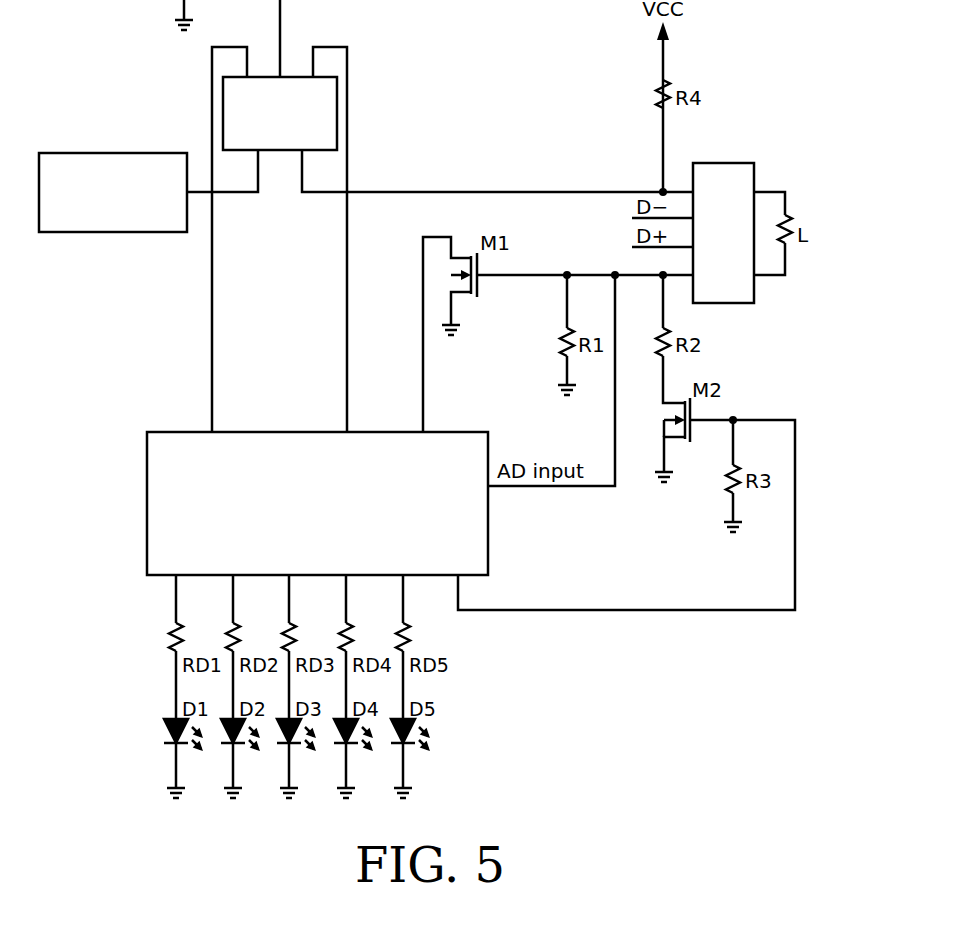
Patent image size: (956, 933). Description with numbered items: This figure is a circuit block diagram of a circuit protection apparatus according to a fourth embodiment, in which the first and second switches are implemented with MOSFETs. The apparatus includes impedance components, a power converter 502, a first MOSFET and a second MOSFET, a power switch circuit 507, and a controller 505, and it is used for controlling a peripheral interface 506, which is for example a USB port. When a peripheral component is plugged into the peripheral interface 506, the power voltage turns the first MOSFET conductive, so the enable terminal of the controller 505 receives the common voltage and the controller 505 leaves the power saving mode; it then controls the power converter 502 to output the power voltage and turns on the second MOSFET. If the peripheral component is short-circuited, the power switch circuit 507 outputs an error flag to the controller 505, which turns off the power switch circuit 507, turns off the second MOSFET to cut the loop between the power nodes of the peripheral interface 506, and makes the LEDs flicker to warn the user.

The power converter 502 is at (113, 152).
The controller 505 is at (147, 505).
The peripheral interface 506 is at (727, 160).
The power switch circuit 507 is at (337, 112).